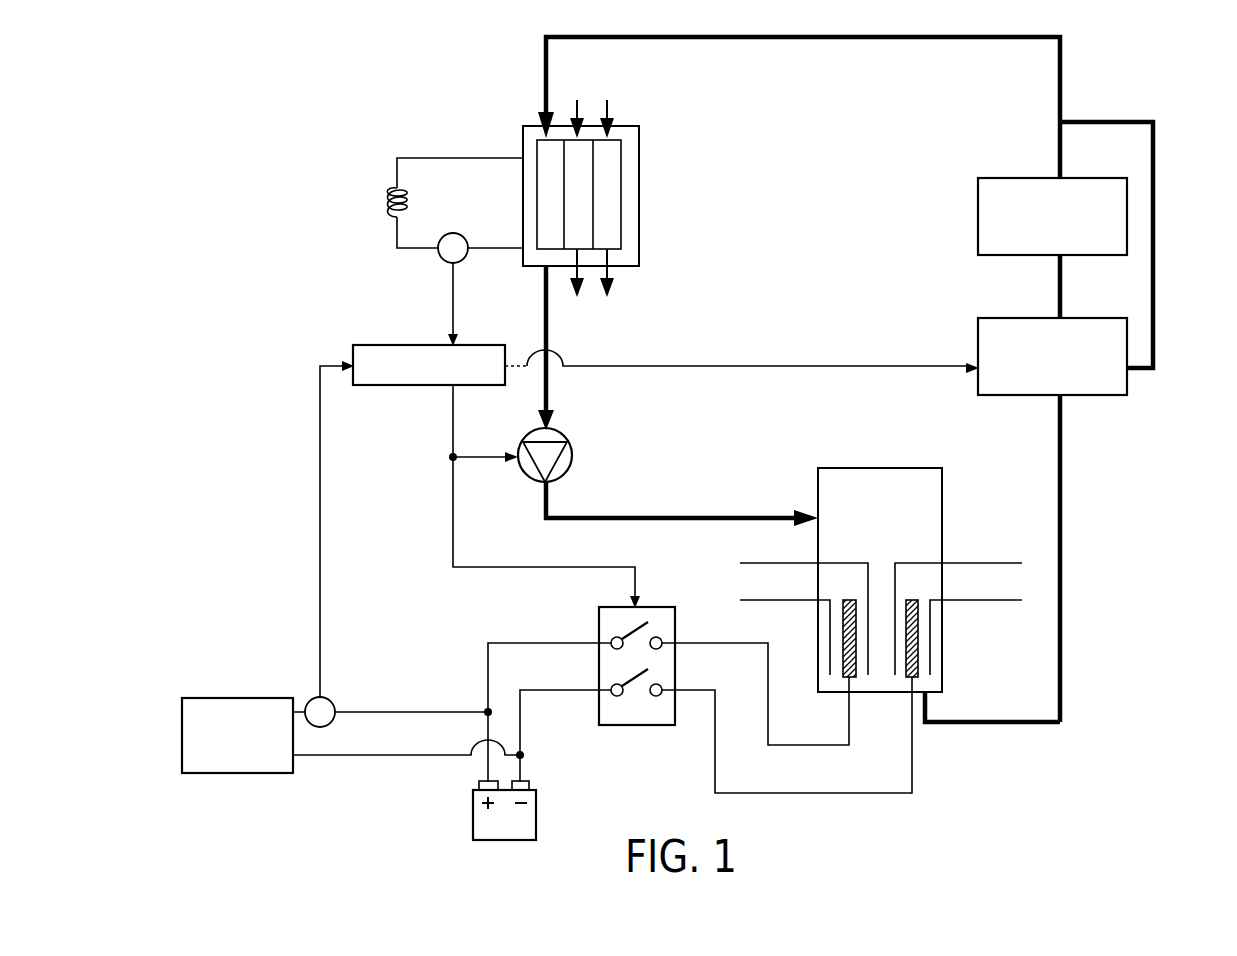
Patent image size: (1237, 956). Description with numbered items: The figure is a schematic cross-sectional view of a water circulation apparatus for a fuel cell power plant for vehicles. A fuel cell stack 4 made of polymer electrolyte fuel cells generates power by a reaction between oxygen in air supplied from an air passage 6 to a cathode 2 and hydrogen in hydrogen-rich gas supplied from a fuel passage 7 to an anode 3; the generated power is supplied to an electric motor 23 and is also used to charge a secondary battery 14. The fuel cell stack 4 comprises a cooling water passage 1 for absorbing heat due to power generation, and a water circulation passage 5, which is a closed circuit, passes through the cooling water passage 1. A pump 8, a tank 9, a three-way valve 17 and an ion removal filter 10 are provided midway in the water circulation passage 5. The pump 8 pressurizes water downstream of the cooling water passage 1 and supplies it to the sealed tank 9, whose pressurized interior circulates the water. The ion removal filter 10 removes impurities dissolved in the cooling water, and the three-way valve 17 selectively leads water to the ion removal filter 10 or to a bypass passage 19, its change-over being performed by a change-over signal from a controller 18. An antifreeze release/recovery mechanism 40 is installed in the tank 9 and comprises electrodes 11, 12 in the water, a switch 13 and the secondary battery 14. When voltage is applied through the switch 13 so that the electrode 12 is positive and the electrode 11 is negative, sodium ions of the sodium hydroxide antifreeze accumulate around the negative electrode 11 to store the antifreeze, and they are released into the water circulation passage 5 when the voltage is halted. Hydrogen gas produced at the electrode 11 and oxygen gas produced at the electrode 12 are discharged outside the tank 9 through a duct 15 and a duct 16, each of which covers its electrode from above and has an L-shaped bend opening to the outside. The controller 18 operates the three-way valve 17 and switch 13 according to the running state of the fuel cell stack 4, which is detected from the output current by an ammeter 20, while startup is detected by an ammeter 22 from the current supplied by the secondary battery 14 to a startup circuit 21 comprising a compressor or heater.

The cooling water passage 1 is at (543, 190).
The cathode 2 is at (582, 172).
The anode 3 is at (617, 228).
The fuel cell stack 4 is at (639, 197).
The water circulation passage 5 is at (1062, 66).
The air passage 6 is at (576, 183).
The fuel passage 7 is at (607, 104).
The pump 8 is at (573, 453).
The tank 9 is at (916, 468).
The ion removal filter 10 is at (1000, 178).
The electrode 11 is at (918, 638).
The electrode 12 is at (843, 629).
The switch 13 is at (677, 622).
The secondary battery 14 is at (537, 805).
The duct 15 is at (1003, 563).
The duct 16 is at (778, 563).
The three-way valve 17 is at (978, 336).
The controller 18 is at (475, 345).
The bypass passage 19 is at (1155, 152).
The ammeter 20 is at (440, 258).
The startup circuit 21 is at (232, 698).
The ammeter 22 is at (332, 700).
The electric motor 23 is at (385, 210).
The antifreeze release/recovery mechanism 40 is at (956, 751).